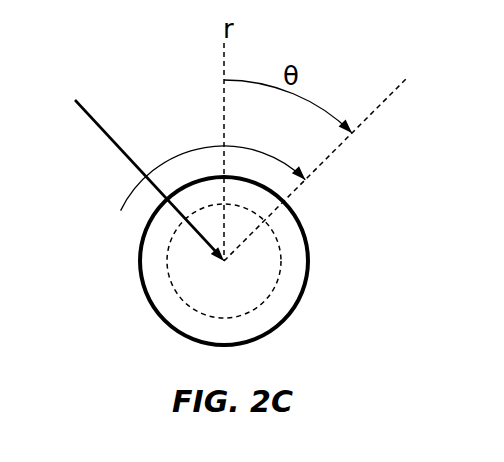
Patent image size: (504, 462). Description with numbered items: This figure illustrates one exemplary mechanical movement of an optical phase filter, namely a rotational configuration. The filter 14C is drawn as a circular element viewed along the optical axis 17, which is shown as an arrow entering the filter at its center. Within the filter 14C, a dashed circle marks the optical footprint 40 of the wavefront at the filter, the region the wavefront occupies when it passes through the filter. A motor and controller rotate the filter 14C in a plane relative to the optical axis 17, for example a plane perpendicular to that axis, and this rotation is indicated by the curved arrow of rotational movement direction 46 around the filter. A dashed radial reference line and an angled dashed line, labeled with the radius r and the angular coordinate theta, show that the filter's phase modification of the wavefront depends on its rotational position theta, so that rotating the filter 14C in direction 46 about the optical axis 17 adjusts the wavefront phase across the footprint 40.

The filter 14C is at (143, 297).
The optical footprint 40 is at (277, 278).
The optical axis 17 is at (98, 125).
The rotational movement direction 46 is at (120, 212).